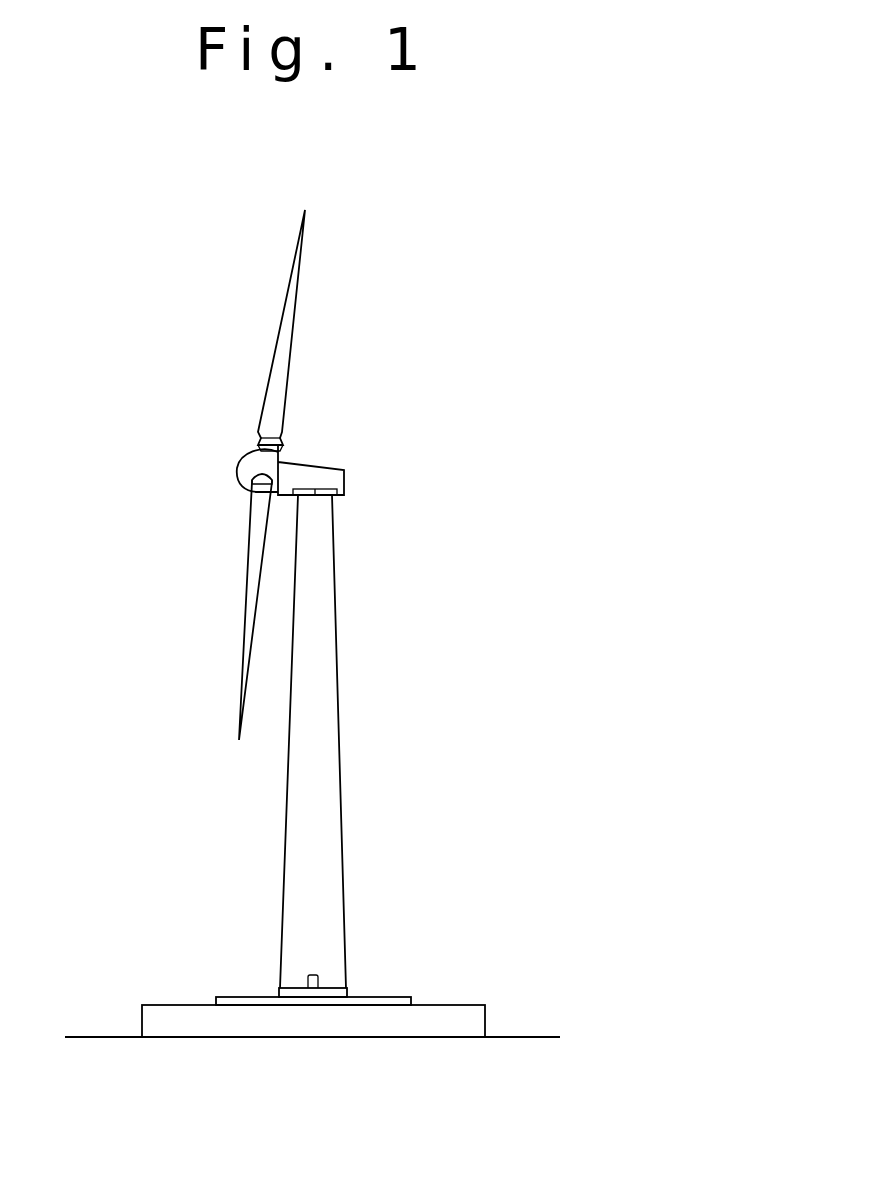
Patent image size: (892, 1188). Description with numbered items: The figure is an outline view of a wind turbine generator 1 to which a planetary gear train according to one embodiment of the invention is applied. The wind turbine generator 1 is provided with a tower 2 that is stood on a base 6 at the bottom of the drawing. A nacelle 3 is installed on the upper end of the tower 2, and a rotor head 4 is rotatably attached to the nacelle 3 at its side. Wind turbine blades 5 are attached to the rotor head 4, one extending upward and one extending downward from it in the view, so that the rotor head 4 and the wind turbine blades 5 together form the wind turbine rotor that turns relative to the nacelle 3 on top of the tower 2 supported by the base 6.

The wind turbine generator 1 is at (64, 317).
The tower 2 is at (338, 680).
The nacelle 3 is at (322, 457).
The rotor head 4 is at (236, 468).
The wind turbine blades 5 is at (280, 316).
The base 6 is at (443, 1012).